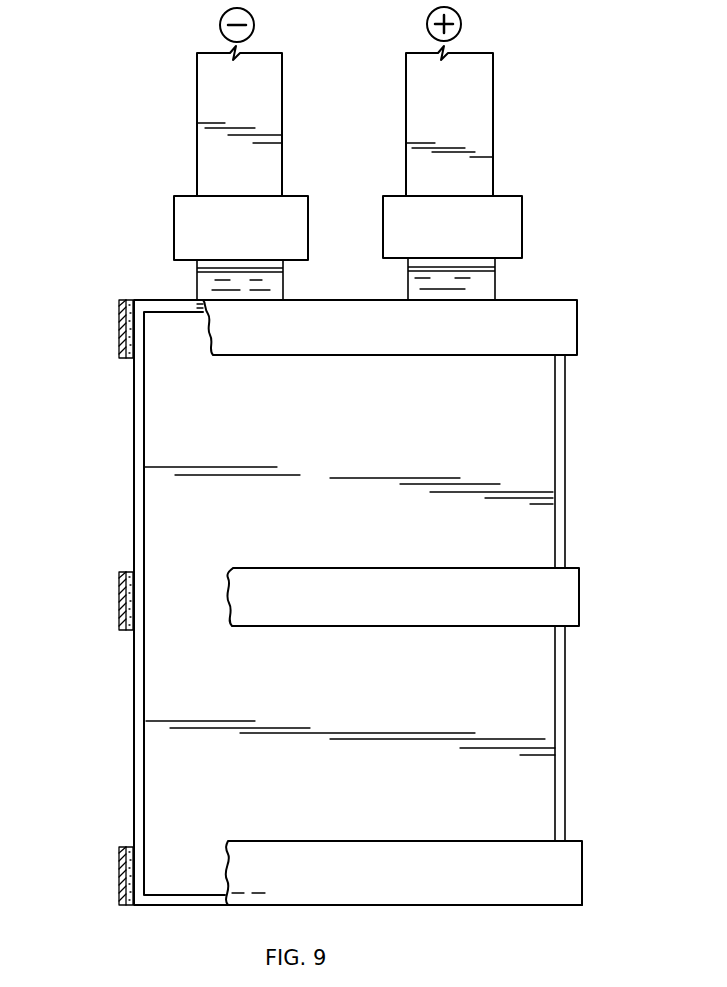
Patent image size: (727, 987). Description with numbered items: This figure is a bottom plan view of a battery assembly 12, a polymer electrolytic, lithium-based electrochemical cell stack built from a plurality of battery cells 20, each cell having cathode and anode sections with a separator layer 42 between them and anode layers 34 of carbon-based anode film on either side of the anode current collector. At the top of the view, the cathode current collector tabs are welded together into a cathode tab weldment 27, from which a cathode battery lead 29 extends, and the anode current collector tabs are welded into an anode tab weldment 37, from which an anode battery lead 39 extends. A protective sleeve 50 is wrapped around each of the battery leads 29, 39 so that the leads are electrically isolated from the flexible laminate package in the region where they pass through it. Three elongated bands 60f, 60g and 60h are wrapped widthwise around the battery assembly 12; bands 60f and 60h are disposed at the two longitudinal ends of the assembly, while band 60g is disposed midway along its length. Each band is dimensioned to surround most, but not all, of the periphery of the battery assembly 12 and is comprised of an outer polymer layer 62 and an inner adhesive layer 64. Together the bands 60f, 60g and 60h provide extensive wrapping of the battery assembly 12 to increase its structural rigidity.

The battery assembly 12 is at (303, 602).
The battery cell 20 is at (172, 410).
The cathode tab weldment 27 is at (482, 281).
The cathode battery lead 29 is at (483, 133).
The anode layer 34 is at (535, 437).
The anode tab weldment 37 is at (203, 280).
The anode battery lead 39 is at (213, 157).
The separator layer 42 is at (137, 476).
The protective sleeve 50 is at (193, 227).
The elongated band 60f is at (590, 323).
The elongated band 60g is at (593, 590).
The elongated band 60h is at (593, 854).
The outer polymer layer 62 is at (72, 596).
The inner adhesive layer 64 is at (118, 328).